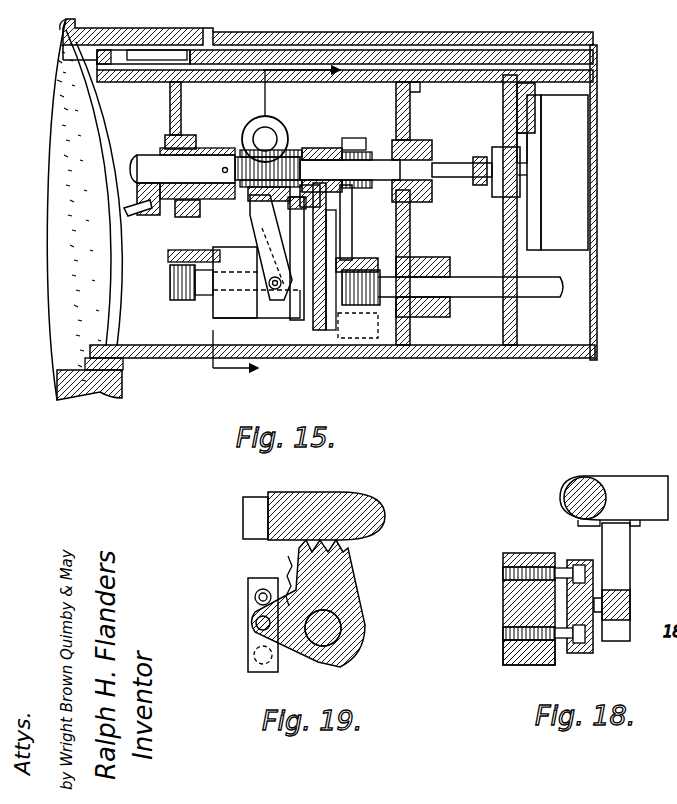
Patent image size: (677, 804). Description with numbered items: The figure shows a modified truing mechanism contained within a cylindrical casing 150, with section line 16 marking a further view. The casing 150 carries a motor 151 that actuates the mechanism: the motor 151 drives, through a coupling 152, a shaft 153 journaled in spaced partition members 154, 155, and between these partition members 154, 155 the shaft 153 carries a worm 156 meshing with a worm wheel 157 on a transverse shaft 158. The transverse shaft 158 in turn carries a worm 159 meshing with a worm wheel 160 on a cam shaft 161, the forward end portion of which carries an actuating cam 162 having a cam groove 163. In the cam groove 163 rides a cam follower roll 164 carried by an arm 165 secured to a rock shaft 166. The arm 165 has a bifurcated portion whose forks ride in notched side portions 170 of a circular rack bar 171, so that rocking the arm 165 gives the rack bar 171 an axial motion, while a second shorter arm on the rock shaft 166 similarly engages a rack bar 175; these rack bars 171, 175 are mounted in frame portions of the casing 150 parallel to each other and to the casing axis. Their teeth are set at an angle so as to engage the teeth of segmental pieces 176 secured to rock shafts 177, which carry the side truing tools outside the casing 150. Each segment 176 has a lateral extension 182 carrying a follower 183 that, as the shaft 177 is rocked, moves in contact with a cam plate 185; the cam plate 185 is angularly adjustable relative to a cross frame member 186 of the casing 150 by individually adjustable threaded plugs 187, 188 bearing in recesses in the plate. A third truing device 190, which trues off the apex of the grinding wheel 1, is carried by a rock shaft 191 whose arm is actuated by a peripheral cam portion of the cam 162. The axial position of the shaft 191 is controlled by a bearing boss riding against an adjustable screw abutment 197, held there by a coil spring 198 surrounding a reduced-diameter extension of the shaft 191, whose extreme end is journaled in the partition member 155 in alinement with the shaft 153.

In FIG. 15, the grinding wheel 1 is at (60, 125).
In FIG. 15, the section line 16— 16 is at (276, 226).
In FIG. 15, the cylindrical casing 150 is at (366, 147).
In FIG. 15, the motor 151 is at (575, 147).
In FIG. 15, the coupling 152 is at (474, 157).
In FIG. 15, the shaft 153 is at (452, 158).
In FIG. 15, the partition member 154 is at (411, 230).
In FIG. 15, the partition member 155 is at (318, 150).
In FIG. 15, the worm 156 is at (412, 99).
In FIG. 15, the worm wheel 157 is at (392, 168).
In FIG. 15, the transverse shaft 158 is at (358, 228).
In FIG. 15, the worm 159 is at (344, 287).
In FIG. 15, the worm wheel 160 is at (358, 258).
In FIG. 15, the cam shaft 161 is at (472, 282).
In FIG. 15, the actuating cam 162 is at (232, 305).
In FIG. 15, the cam groove 163 is at (261, 247).
In FIG. 15, the cam follower roll 164 is at (256, 294).
In FIG. 15, the arm 165 is at (271, 183).
In FIG. 15, the rock shaft 166 is at (270, 135).
In FIG. 15, the notched side portions 170 is at (301, 258).
In FIG. 15, the circular rack bar 171 is at (312, 199).
In FIG. 19, the rack bar 175 is at (358, 500).
In FIG. 18, the rack bar 175 is at (635, 480).
In FIG. 19, the segmental piece 176 is at (338, 568).
In FIG. 18, the segmental piece 176 is at (618, 640).
In FIG. 19, the rock shaft 177 is at (328, 633).
In FIG. 19, the lateral extension 182 is at (276, 577).
In FIG. 19, the follower 183 is at (256, 624).
In FIG. 18, the follower 183 is at (633, 596).
In FIG. 19, the cam plate 185 is at (250, 586).
In FIG. 18, the cam plate 185 is at (578, 562).
In FIG. 15, the cross frame member 186 is at (170, 101).
In FIG. 18, the cross frame member 186 is at (503, 598).
In FIG. 18, the threaded plug 187 is at (545, 560).
In FIG. 18, the threaded plug 188 is at (540, 662).
In FIG. 15, the third truing device 190 is at (154, 210).
In FIG. 15, the rock shaft 191 is at (195, 165).
In FIG. 15, the adjustable screw abutment 197 is at (204, 218).
In FIG. 15, the coil spring 198 is at (240, 158).